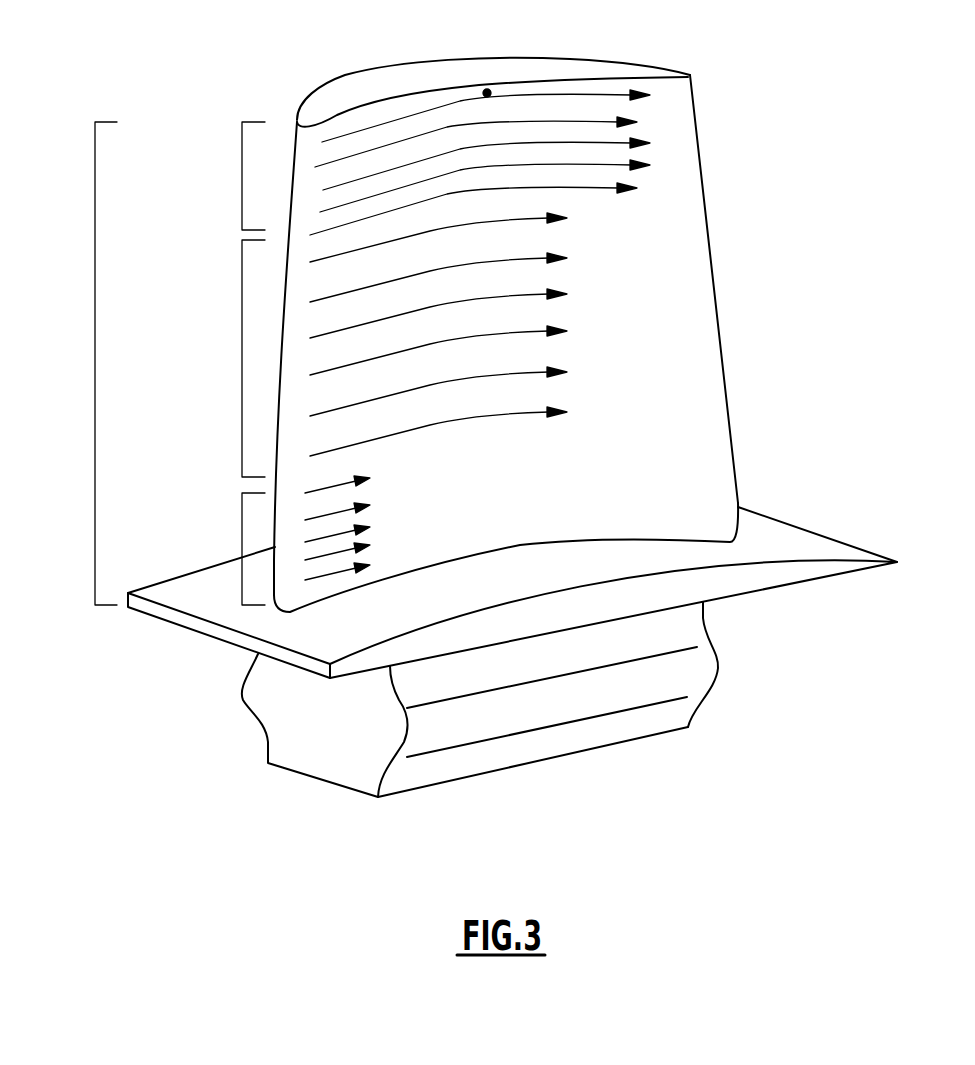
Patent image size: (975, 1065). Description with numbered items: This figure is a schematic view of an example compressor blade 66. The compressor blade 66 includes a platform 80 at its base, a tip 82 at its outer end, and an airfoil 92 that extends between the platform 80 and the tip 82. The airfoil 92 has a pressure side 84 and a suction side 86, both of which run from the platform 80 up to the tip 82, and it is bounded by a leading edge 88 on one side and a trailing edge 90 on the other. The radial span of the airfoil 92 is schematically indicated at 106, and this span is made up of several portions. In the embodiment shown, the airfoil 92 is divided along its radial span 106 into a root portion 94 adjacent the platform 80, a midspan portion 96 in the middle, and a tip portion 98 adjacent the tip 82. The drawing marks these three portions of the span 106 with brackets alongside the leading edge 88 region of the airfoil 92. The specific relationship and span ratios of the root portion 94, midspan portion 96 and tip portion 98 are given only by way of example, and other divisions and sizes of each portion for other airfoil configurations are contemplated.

The compressor blade 66 is at (549, 306).
The platform 80 is at (795, 537).
The tip 82 is at (358, 90).
The pressure side 84 is at (476, 118).
The suction side 86 is at (423, 46).
The leading edge 88 is at (264, 295).
The trailing edge 90 is at (735, 301).
The airfoil 92 is at (522, 113).
The root portion 94 is at (242, 548).
The midspan portion 96 is at (242, 375).
The tip portion 98 is at (414, 128).
The radial span 106 is at (95, 352).